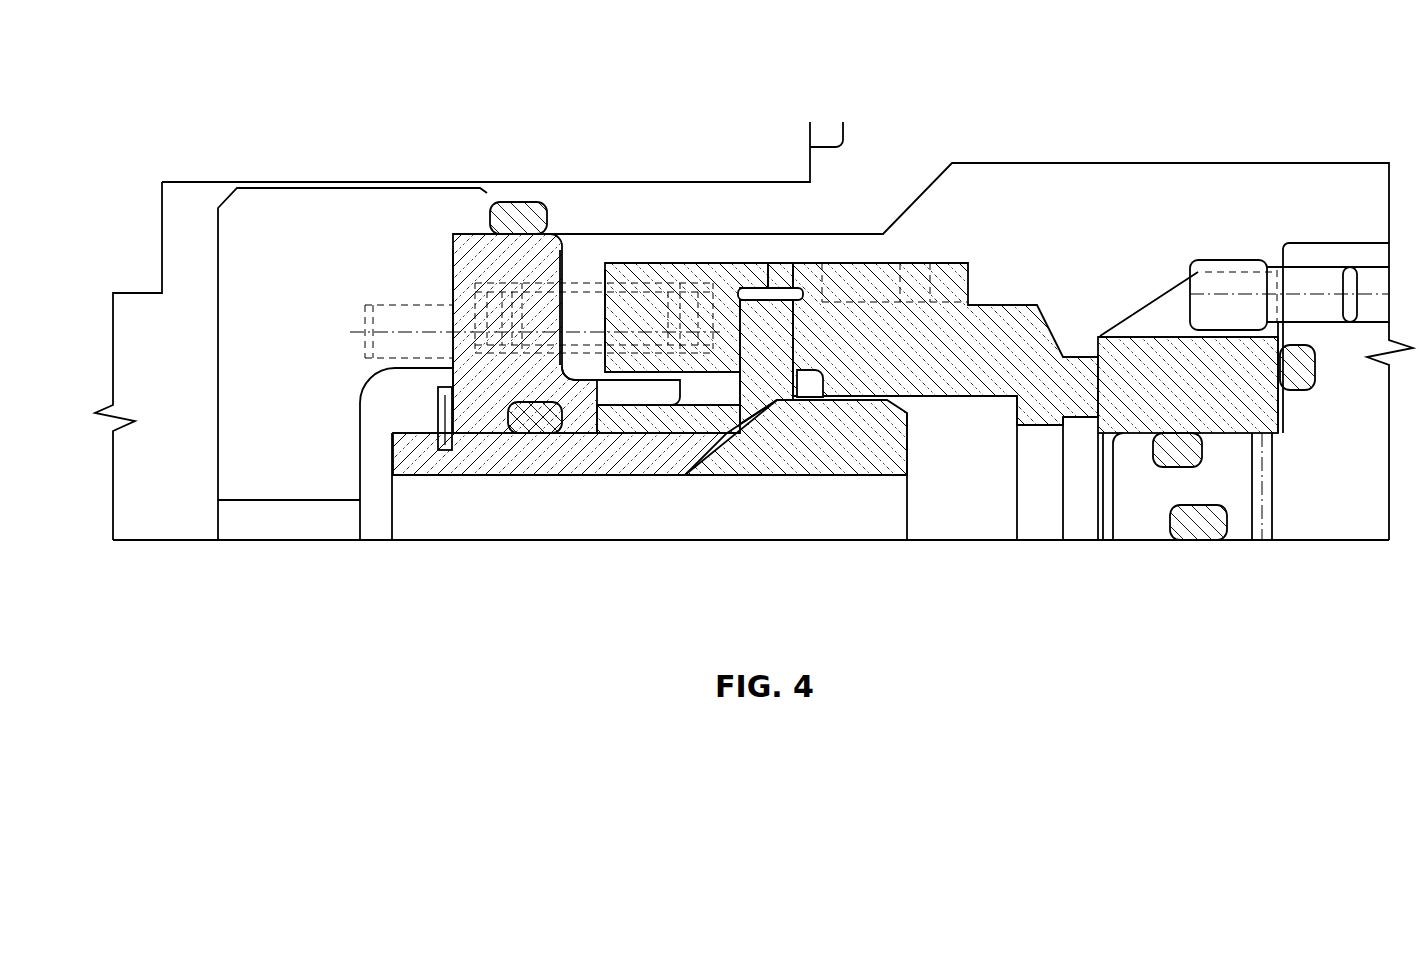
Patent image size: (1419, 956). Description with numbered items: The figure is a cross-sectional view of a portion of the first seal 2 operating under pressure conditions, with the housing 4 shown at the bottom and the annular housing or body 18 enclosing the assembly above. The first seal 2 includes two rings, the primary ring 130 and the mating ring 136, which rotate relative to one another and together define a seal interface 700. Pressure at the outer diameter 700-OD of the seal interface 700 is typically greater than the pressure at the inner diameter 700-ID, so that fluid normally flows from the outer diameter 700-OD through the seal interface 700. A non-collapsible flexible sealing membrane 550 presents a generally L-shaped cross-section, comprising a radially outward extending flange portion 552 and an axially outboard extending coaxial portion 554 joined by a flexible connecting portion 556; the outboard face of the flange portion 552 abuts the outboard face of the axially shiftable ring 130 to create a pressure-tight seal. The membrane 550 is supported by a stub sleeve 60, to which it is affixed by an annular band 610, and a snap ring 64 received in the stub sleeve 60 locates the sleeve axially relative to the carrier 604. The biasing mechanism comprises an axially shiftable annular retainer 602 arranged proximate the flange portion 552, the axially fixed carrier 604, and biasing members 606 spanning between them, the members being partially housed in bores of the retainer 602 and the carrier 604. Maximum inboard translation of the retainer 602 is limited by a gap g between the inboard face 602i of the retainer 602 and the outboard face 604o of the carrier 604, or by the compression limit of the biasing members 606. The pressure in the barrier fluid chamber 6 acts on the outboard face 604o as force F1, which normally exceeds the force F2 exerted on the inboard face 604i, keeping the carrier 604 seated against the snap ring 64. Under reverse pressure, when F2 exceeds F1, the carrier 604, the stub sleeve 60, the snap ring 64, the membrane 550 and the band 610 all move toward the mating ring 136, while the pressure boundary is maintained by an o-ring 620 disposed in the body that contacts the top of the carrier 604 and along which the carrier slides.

The first seal 2 is at (472, 566).
The housing 4 is at (858, 598).
The barrier fluid chamber 6 is at (1153, 237).
The annular housing 18 is at (348, 70).
The stub sleeve 60 is at (753, 458).
The snap ring 64 is at (443, 452).
The primary ring 130 is at (957, 374).
The mating ring 136 is at (1208, 376).
The non-collapsible flexible sealing membrane 550 is at (638, 432).
The flange portion 552 is at (785, 358).
The coaxial portion 554 is at (663, 432).
The flexible connecting portion 556 is at (707, 428).
The annular retainer 602 is at (697, 272).
The inboard face of retainer 602i is at (613, 273).
The carrier 604 is at (472, 240).
The inboard face of carrier 604i is at (453, 268).
The outboard face of carrier 604o is at (557, 267).
The biasing member 606 is at (572, 282).
The annular band 610 is at (613, 398).
The o-ring 620 is at (513, 217).
The seal interface 700 is at (1100, 393).
The outer diameter of seal interface 700-OD is at (1093, 355).
The inner diameter of seal interface 700-ID is at (1100, 428).
The force F1 is at (578, 252).
The force F2 is at (426, 378).
The gap g is at (594, 368).